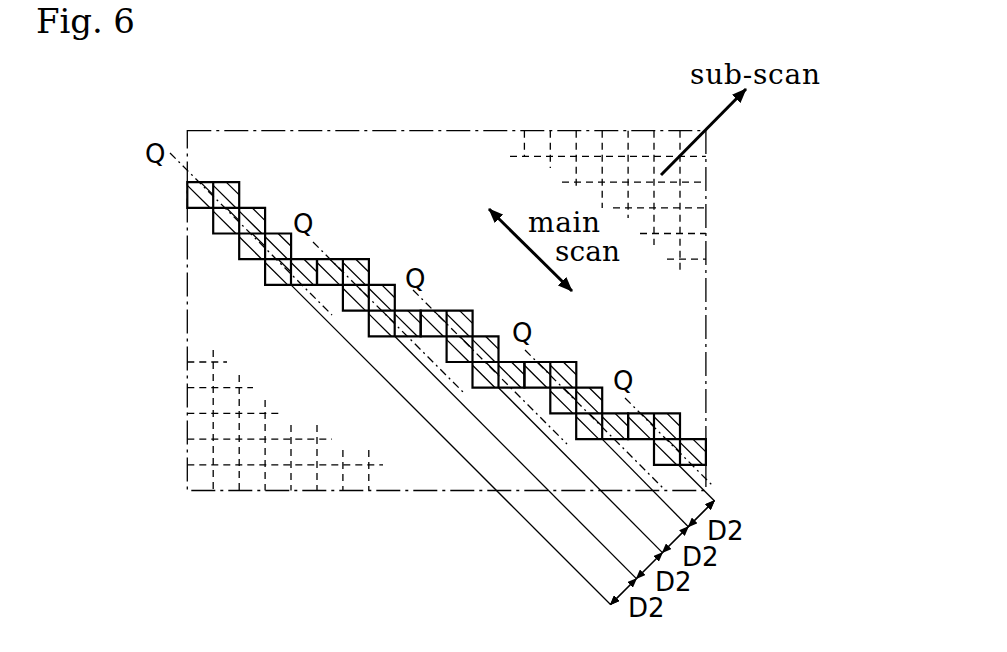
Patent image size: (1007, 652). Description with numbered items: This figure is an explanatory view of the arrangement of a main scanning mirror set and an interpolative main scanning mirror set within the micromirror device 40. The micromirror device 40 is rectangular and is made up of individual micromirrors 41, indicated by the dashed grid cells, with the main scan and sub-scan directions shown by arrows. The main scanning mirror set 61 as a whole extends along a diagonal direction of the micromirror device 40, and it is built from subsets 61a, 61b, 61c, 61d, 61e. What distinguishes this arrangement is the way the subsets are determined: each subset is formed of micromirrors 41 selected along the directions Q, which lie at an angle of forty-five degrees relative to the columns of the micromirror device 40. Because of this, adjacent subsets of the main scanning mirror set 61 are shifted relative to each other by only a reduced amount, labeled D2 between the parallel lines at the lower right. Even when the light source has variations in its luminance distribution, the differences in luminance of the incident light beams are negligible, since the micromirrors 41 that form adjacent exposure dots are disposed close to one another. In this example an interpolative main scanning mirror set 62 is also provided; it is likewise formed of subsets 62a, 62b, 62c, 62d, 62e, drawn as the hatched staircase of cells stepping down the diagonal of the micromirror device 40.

The micromirror device 40 is at (595, 128).
The micromirrors 41 is at (694, 243).
The main scanning mirror set 61 is at (236, 298).
The subset 61a is at (236, 260).
The subset 61b is at (340, 312).
The subset 61c is at (444, 362).
The subset 61d is at (547, 414).
The subset 61e is at (651, 466).
The interpolative main scanning mirror set 62 is at (479, 275).
The subset 62a is at (267, 206).
The subset 62b is at (371, 257).
The subset 62c is at (465, 309).
The subset 62d is at (579, 360).
The subset 62e is at (682, 411).